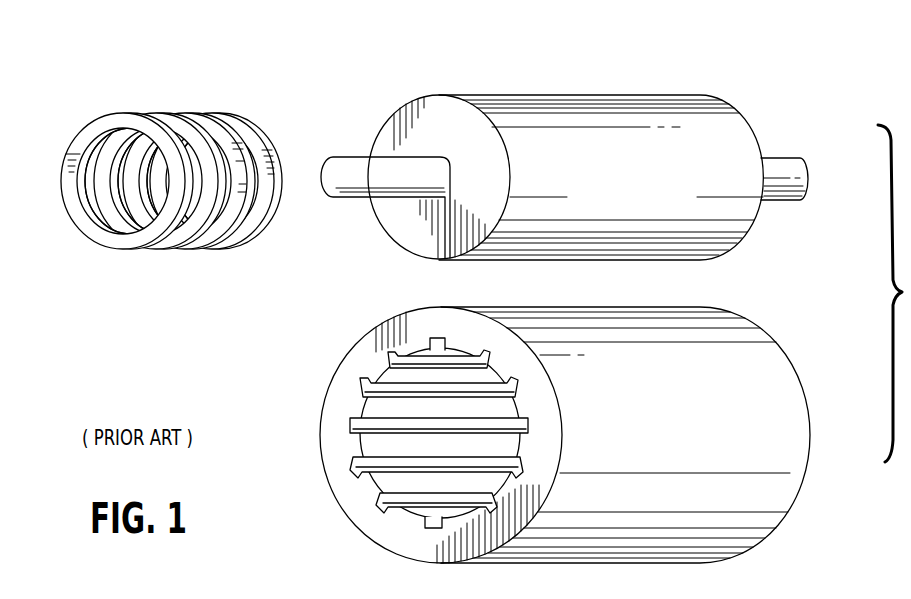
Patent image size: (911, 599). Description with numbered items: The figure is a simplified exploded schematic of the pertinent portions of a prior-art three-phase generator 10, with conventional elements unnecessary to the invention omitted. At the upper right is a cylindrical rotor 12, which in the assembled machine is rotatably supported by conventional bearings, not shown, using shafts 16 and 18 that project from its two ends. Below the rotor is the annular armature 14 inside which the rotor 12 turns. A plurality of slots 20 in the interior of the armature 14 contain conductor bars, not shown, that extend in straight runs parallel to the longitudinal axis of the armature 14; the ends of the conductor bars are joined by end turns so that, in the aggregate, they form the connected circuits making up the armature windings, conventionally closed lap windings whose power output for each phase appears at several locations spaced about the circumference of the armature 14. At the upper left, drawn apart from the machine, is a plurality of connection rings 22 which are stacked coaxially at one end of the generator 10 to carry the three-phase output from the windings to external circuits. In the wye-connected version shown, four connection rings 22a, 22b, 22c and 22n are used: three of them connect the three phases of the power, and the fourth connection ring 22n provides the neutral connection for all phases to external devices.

The three-phase generator 10 is at (587, 303).
The cylindrical rotor 12 is at (585, 112).
The annular armature 14 is at (767, 358).
The shaft 16 is at (348, 167).
The shaft 18 is at (780, 163).
The slots 20 is at (350, 426).
The connection rings 22 is at (184, 195).
The connection ring 22a is at (97, 125).
The connection ring 22b is at (165, 122).
The connection ring 22c is at (210, 120).
The connection ring 22n is at (252, 132).